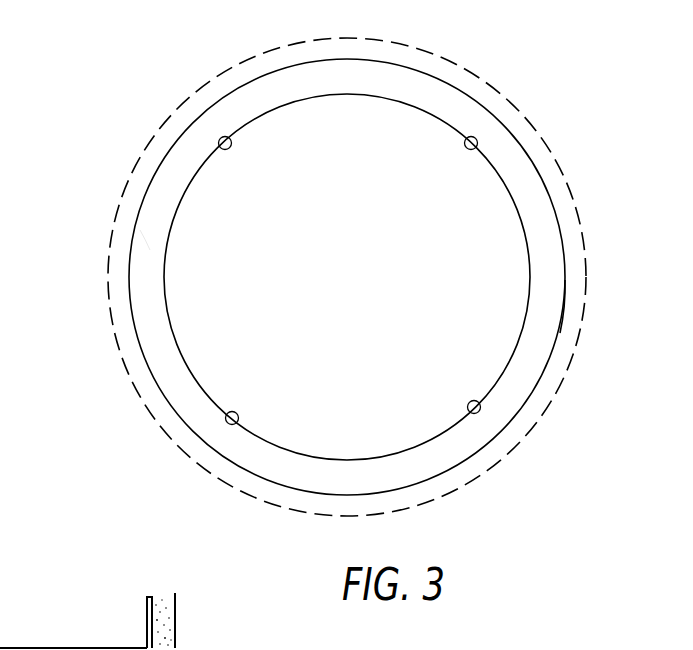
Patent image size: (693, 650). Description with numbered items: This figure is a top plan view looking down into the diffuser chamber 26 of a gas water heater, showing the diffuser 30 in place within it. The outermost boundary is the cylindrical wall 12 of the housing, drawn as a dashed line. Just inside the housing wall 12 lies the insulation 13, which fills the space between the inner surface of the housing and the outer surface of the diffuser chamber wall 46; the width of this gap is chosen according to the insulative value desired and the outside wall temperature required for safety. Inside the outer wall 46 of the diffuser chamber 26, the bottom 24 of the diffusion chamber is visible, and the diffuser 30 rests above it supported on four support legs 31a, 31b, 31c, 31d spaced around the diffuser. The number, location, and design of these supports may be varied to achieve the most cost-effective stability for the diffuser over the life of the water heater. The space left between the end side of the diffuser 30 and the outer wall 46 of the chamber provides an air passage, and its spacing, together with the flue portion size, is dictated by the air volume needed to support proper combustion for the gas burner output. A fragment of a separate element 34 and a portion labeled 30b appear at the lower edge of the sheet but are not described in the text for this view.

The cylindrical wall of the housing 12 is at (543, 136).
The insulation 13 is at (575, 222).
The bottom of the diffusion chamber 24 is at (551, 283).
The diffuser chamber 26 is at (140, 232).
The diffuser 30 is at (407, 367).
The support leg 31a is at (232, 425).
The support leg 31b is at (474, 414).
The support leg 31c is at (471, 136).
The support leg 31d is at (225, 136).
The base plate 34 is at (0, 620).
The outer wall of the diffuser chamber 46 is at (560, 333).
The opening portion 30b is at (212, 624).